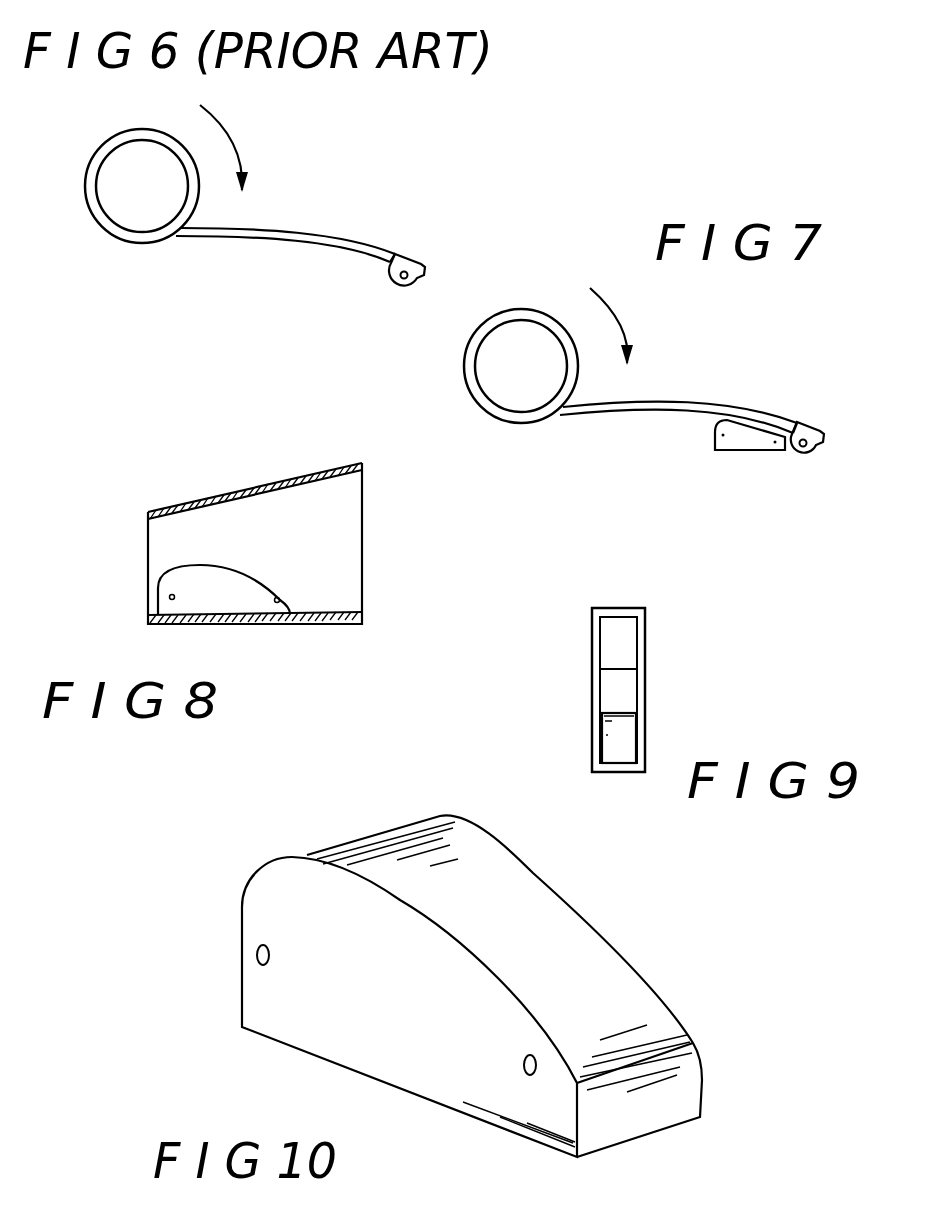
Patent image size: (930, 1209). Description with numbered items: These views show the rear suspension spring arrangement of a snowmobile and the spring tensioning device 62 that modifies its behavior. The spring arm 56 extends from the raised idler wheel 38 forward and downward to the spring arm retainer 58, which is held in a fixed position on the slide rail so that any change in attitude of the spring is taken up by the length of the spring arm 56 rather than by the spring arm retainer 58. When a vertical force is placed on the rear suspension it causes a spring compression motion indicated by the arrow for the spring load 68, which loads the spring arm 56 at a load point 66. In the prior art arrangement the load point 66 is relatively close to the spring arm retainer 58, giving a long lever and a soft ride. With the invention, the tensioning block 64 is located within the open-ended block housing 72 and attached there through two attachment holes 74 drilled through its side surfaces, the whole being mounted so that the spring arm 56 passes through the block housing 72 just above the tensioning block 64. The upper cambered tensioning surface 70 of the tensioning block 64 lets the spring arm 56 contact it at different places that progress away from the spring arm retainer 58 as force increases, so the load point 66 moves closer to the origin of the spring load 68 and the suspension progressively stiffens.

In FIG. 6, the raised idler wheel 38 is at (137, 243).
In FIG. 7, the raised idler wheel 38 is at (515, 424).
In FIG. 6, the spring arm 56 is at (223, 243).
In FIG. 7, the spring arm 56 is at (590, 422).
In FIG. 6, the spring arm retainer 58 is at (387, 277).
In FIG. 7, the spring arm retainer 58 is at (807, 422).
In FIG. 8, the spring tensioning device 62 is at (142, 497).
In FIG. 9, the spring tensioning device 62 is at (665, 677).
In FIG. 7, the tensioning block 64 is at (713, 444).
In FIG. 8, the tensioning block 64 is at (173, 577).
In FIG. 9, the tensioning block 64 is at (625, 743).
In FIG. 10, the tensioning block 64 is at (233, 902).
In FIG. 6, the load point 66 is at (383, 245).
In FIG. 7, the load point 66 is at (737, 403).
In FIG. 6, the spring load 68 is at (242, 152).
In FIG. 7, the spring load 68 is at (623, 332).
In FIG. 8, the upper cambered tensioning surface 70 is at (203, 562).
In FIG. 9, the upper cambered tensioning surface 70 is at (613, 712).
In FIG. 10, the upper cambered tensioning surface 70 is at (450, 900).
In FIG. 8, the block housing 72 is at (285, 482).
In FIG. 9, the block housing 72 is at (647, 628).
In FIG. 10, the holes 74 is at (522, 1064).